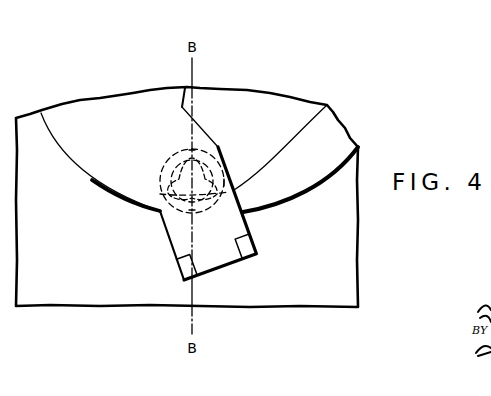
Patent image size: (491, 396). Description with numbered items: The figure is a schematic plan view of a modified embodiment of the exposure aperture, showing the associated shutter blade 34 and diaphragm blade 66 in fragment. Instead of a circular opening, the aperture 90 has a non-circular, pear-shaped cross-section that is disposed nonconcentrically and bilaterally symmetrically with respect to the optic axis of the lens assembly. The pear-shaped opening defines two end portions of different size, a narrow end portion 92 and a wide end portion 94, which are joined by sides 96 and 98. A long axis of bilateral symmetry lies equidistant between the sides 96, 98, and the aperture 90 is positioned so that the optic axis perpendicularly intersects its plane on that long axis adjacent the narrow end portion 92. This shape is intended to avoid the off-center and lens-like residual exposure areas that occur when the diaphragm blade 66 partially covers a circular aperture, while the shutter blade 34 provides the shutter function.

The blade 34 is at (82, 116).
The diaphragm blade 66 is at (336, 120).
The aperture 90 is at (184, 184).
The narrow end portion 92 is at (200, 127).
The wide end portion 94 is at (190, 203).
The side 96 is at (162, 177).
The side 98 is at (228, 192).